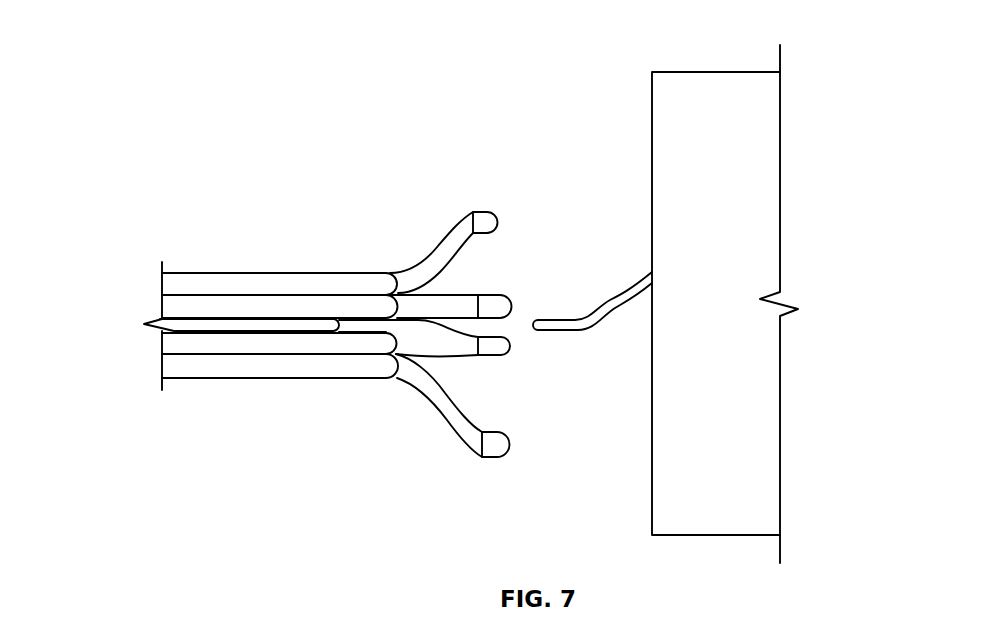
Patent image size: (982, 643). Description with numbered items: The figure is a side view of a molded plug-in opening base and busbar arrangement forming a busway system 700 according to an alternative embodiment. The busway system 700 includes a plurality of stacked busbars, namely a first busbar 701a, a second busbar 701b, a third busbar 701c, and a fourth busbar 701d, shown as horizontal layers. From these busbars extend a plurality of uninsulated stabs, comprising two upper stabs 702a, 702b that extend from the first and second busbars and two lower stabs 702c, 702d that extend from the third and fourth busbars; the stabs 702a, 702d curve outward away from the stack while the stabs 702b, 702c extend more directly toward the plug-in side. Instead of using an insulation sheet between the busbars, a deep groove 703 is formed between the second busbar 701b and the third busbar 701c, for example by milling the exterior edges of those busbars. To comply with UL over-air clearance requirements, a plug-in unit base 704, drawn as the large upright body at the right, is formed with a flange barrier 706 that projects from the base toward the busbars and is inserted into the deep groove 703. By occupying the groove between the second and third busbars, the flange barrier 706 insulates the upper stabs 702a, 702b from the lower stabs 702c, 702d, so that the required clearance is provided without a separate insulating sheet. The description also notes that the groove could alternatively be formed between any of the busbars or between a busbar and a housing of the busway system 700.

The busway system 700 is at (313, 76).
The first busbar 701a is at (281, 283).
The second busbar 701b is at (173, 310).
The third busbar 701c is at (172, 342).
The fourth busbar 701d is at (218, 368).
The upper stab 702a is at (458, 232).
The upper stab 702b is at (505, 302).
The lower stab 702c is at (497, 342).
The lower stab 702d is at (463, 440).
The deep groove 703 is at (401, 327).
The plug-in unit base 704 is at (765, 122).
The flange barrier 706 is at (621, 295).